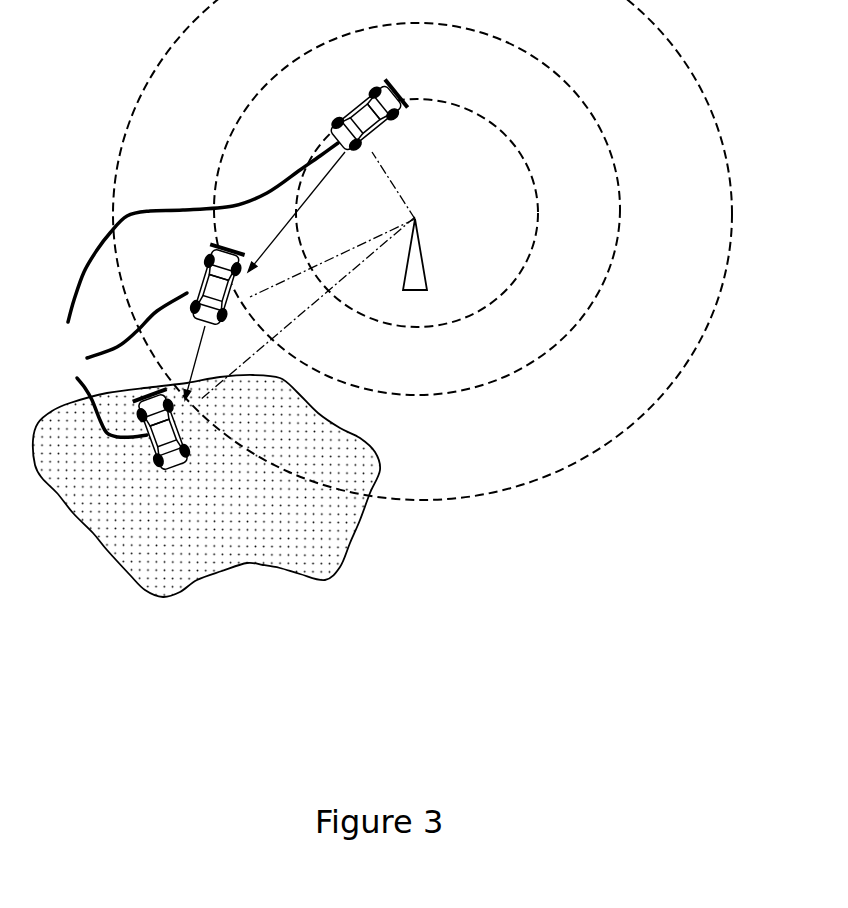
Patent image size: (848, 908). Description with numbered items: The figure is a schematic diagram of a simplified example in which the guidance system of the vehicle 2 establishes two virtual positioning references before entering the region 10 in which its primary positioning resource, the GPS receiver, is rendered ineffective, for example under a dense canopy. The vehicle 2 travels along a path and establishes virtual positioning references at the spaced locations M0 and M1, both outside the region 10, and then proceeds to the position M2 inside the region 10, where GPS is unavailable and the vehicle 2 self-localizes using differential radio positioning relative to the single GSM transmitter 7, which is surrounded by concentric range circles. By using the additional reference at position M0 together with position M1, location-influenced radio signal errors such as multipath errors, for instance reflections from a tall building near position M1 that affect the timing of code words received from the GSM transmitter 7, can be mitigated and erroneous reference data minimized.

The vehicle 2 is at (194, 290).
The GSM transmitter 7 is at (432, 230).
The region 10 is at (228, 528).
The position M0 is at (359, 117).
The position M1 is at (197, 285).
The position M2 is at (187, 442).